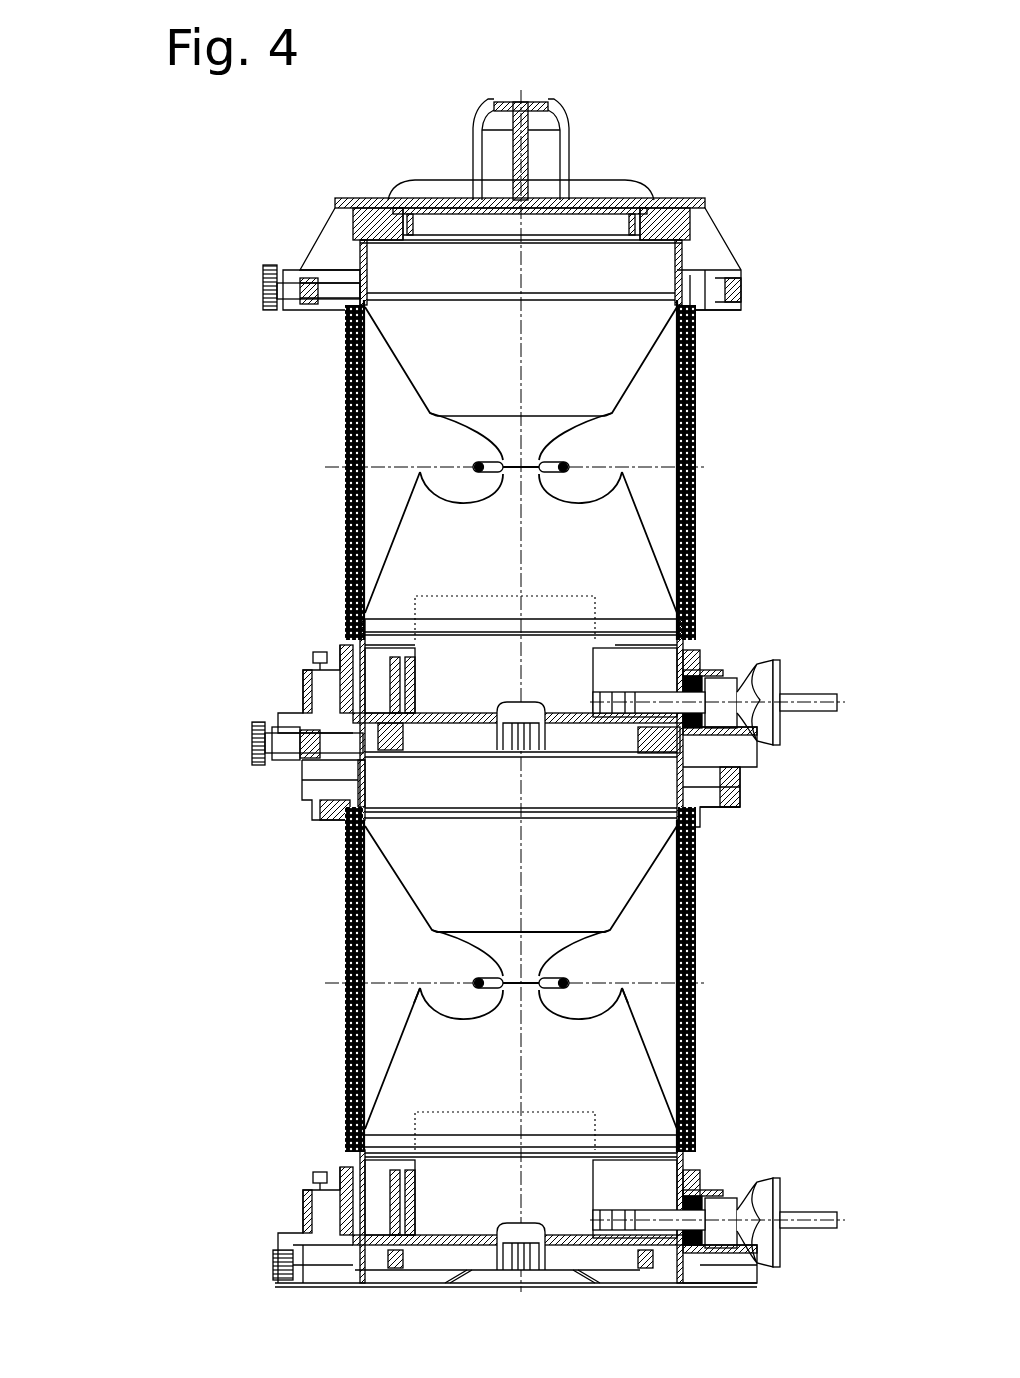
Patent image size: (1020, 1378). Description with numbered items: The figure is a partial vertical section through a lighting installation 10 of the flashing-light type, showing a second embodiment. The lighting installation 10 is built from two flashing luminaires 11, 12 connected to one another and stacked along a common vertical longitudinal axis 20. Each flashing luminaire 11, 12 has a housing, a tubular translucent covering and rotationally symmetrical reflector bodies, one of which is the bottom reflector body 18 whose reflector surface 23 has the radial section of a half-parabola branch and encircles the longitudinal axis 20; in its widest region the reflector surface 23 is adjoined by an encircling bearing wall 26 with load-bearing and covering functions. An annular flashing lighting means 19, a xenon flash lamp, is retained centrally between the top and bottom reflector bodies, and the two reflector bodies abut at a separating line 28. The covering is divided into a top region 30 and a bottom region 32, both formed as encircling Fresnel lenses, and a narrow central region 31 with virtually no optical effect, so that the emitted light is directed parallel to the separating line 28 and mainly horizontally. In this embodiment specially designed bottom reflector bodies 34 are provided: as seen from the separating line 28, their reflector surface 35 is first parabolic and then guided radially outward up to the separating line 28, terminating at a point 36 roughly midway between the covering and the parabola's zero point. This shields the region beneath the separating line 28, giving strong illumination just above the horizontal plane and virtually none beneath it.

The lighting installation 10 is at (740, 85).
The flashing luminaire 11 is at (200, 529).
The flashing luminaire 12 is at (172, 1036).
The bottom reflector body 18 is at (588, 337).
The flashing lighting means 19 is at (573, 458).
The longitudinal axis 20 is at (523, 97).
The reflector surface 23 is at (610, 440).
The bearing wall 26 is at (647, 367).
The separating line 28 is at (340, 463).
The top region 30 is at (347, 866).
The central region 31 is at (350, 996).
The bottom region 32 is at (345, 1077).
The bottom reflector body 34 is at (613, 562).
The reflector surface 35 is at (452, 487).
The point 36 is at (420, 985).